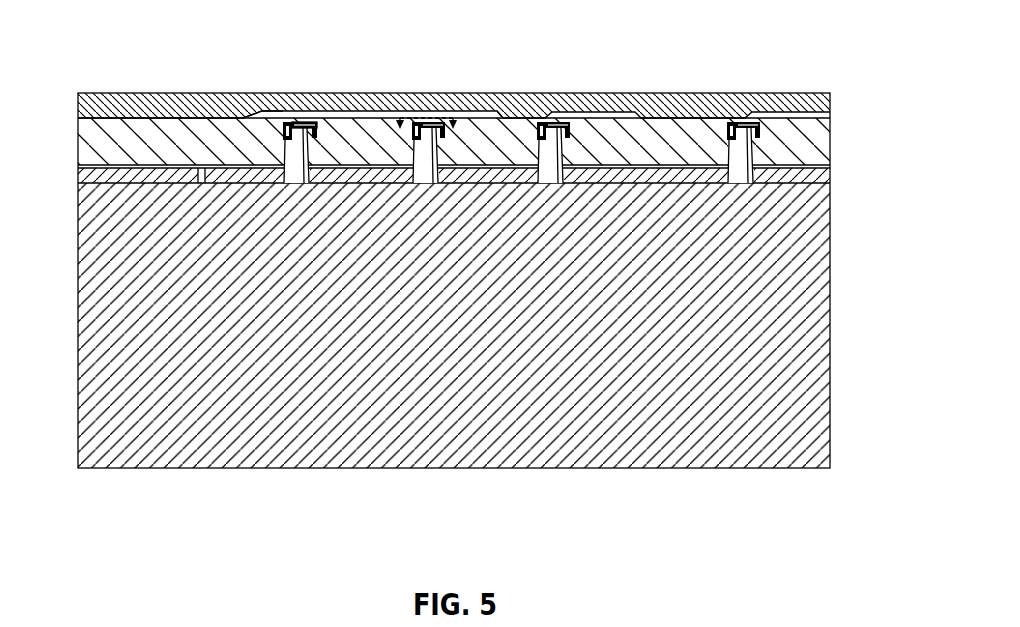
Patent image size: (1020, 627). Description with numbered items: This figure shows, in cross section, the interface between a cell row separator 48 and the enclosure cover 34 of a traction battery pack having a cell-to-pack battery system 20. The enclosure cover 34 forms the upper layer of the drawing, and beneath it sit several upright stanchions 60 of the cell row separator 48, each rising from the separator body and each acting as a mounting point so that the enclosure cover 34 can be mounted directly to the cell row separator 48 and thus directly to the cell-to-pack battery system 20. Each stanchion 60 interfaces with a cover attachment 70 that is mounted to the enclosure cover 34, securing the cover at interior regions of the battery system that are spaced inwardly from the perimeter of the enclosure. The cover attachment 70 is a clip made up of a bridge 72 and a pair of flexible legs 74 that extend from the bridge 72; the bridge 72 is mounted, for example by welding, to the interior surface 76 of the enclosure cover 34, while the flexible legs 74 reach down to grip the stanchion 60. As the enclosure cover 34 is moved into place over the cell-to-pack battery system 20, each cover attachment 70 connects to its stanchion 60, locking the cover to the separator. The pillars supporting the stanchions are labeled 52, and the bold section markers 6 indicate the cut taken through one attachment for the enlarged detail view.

The cell-to-pack battery system 20 is at (118, 55).
The enclosure cover 34 is at (462, 110).
The cell row separator 48 is at (85, 356).
The pillar 52 is at (293, 168).
The stanchion 60 is at (319, 131).
The cover attachment 70 is at (287, 116).
The bridge 72 is at (291, 121).
The flexible legs 74 is at (283, 130).
The interior surface 76 is at (499, 119).
The section line 6- 6 is at (426, 141).